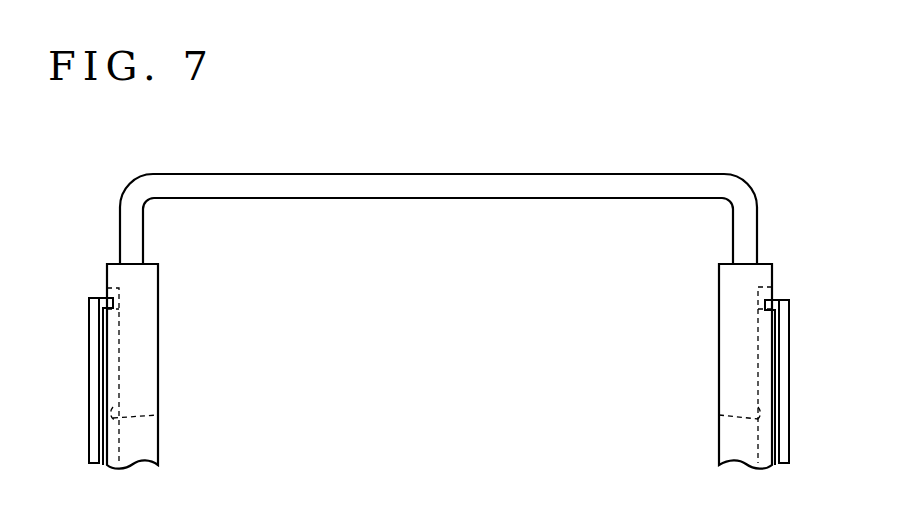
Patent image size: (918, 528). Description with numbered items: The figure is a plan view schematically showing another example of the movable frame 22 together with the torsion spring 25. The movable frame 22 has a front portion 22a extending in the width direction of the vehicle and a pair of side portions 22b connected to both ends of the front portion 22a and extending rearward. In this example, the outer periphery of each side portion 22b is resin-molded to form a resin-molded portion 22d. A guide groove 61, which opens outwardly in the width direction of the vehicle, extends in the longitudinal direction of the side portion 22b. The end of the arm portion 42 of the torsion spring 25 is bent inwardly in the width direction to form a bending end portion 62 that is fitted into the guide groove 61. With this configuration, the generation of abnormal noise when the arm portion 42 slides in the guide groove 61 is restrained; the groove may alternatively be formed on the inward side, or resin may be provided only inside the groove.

The movable frame 22 is at (438, 192).
The front portion 22a is at (460, 175).
The side portions 22b is at (121, 233).
The resin-molded portion 22d is at (158, 351).
The guide groove 61 is at (158, 415).
The bending end portion 62 is at (100, 298).
The arm portion 42 is at (442, 383).
The torsion spring 25 is at (818, 428).